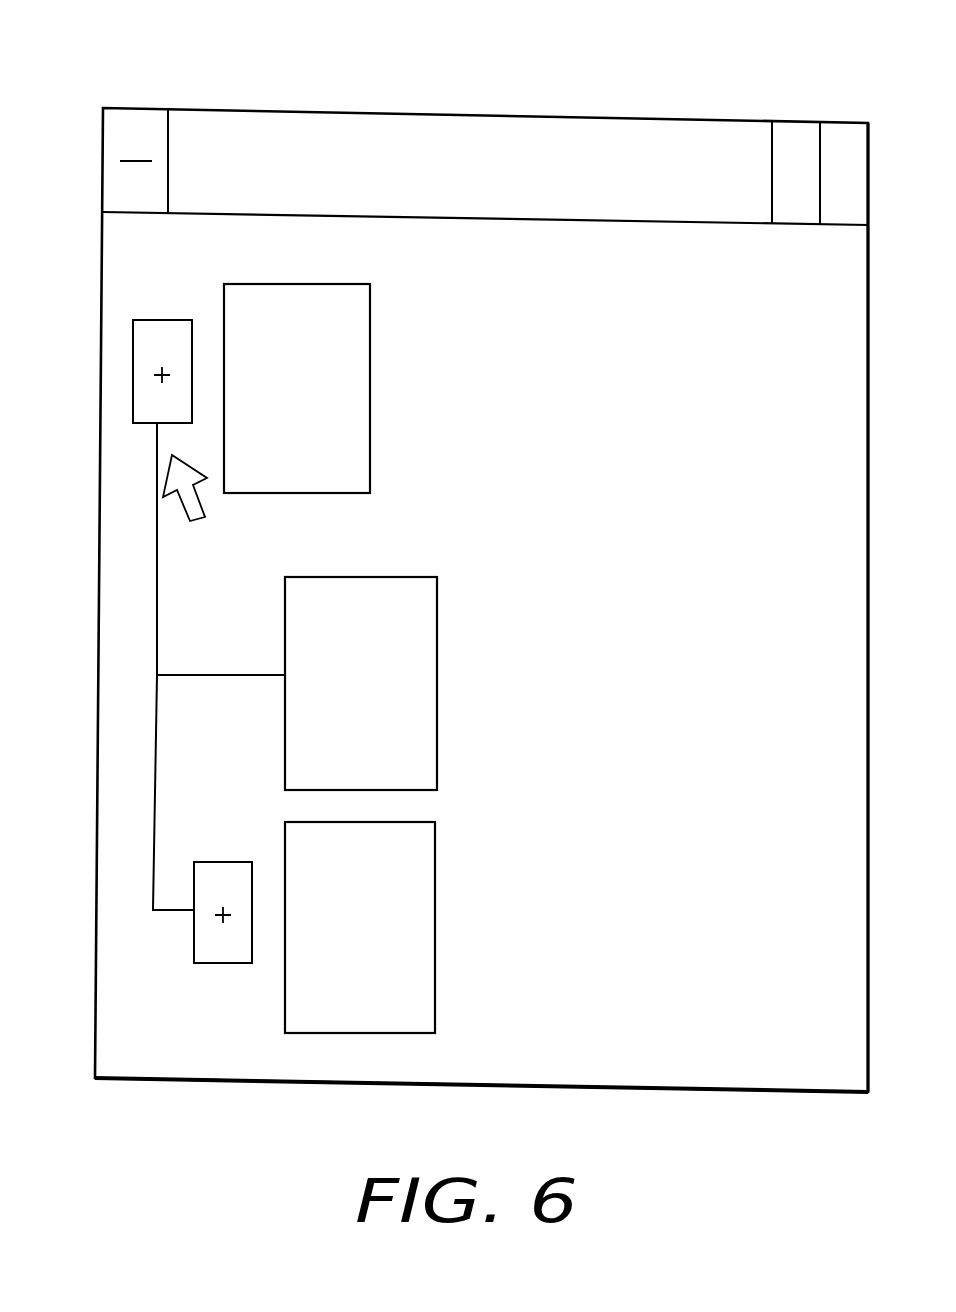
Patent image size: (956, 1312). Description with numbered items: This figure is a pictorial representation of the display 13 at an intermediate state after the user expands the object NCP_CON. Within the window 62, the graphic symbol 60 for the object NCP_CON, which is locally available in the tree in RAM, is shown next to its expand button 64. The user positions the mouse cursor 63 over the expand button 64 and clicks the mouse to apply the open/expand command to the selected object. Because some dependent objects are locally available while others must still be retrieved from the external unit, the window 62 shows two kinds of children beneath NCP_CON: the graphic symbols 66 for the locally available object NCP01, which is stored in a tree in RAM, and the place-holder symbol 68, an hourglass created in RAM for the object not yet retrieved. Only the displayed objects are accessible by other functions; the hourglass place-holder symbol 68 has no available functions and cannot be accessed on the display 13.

The display 13 is at (107, 97).
The window 62 is at (462, 115).
The graphic symbol 60 is at (370, 310).
The mouse cursor 63 is at (205, 517).
The expand button 64 is at (133, 385).
The place-holder symbol 68 is at (437, 610).
The graphic symbols 66 is at (435, 852).